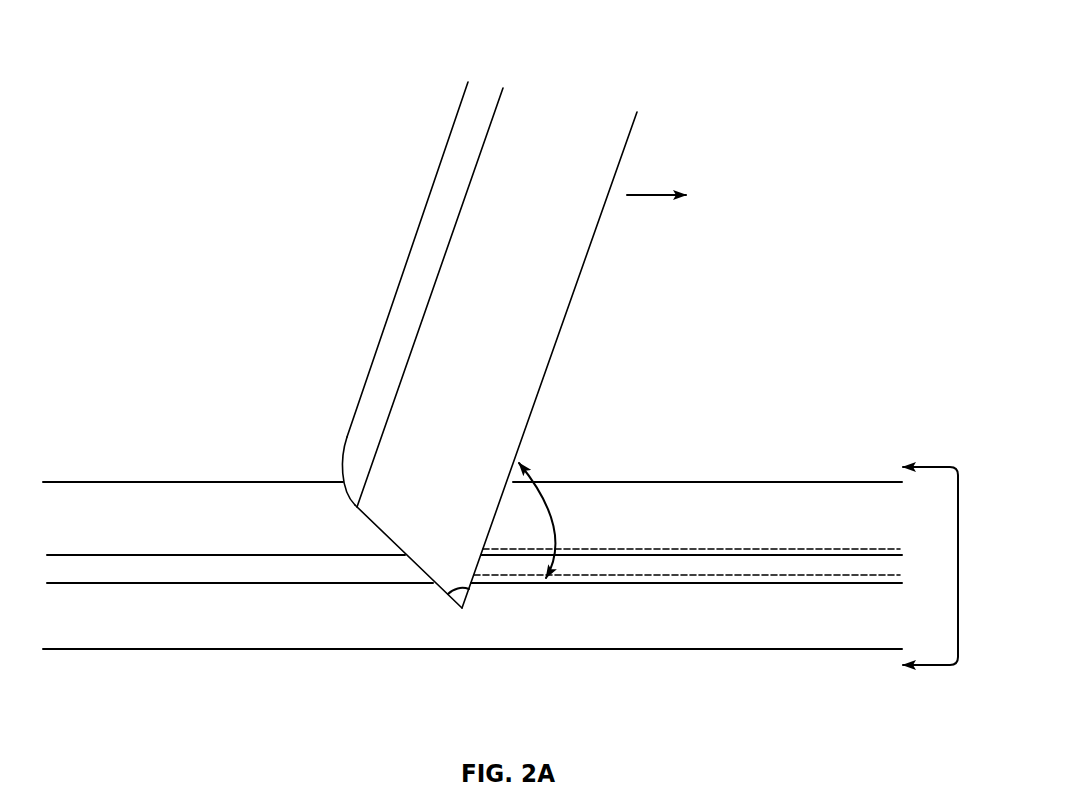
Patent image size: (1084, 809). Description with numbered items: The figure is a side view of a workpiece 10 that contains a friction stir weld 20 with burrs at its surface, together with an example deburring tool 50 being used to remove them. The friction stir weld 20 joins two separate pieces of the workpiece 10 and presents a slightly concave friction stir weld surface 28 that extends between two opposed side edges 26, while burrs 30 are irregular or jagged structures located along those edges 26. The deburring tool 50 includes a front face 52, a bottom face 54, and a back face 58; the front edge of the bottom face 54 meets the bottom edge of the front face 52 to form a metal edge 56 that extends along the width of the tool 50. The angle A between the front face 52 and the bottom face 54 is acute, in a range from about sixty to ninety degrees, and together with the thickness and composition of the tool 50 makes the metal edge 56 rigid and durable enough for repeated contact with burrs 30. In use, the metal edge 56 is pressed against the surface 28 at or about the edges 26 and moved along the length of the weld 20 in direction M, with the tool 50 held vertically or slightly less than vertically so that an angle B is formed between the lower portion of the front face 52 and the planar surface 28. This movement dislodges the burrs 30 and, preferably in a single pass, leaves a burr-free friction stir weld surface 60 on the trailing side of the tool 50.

The workpiece 10 is at (785, 322).
The friction stir weld 20 is at (771, 564).
The side edges 26 is at (667, 583).
The friction stir weld surface 28 is at (642, 617).
The burrs 30 is at (622, 549).
The deburring tool 50 is at (437, 142).
The front face 52 is at (583, 270).
The bottom face 54 is at (353, 509).
The metal edge 56 is at (469, 616).
The back face 58 is at (403, 270).
The burr-free friction stir weld surface 60 is at (172, 536).
The angle A is at (448, 592).
The angle B is at (555, 513).
The direction M is at (668, 196).